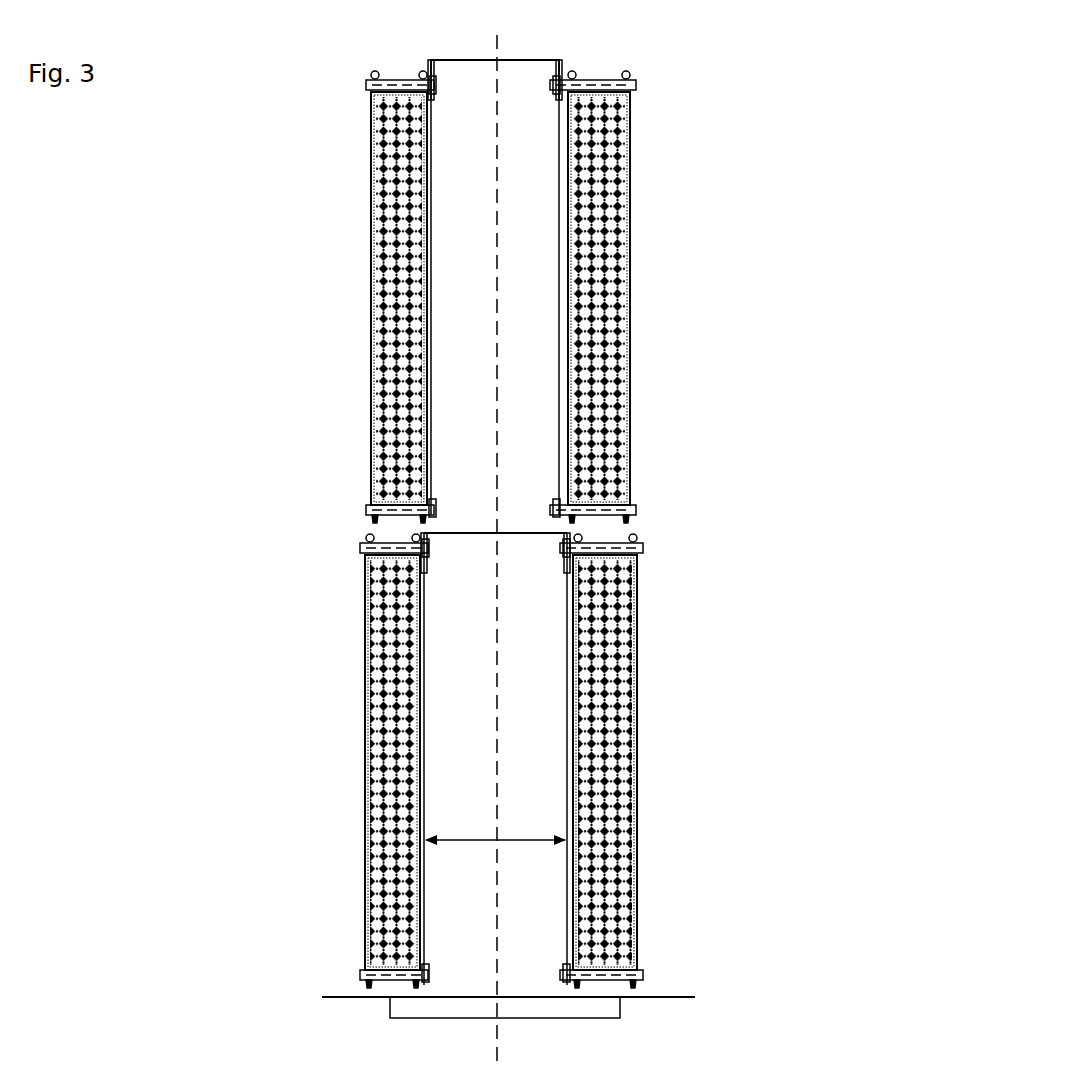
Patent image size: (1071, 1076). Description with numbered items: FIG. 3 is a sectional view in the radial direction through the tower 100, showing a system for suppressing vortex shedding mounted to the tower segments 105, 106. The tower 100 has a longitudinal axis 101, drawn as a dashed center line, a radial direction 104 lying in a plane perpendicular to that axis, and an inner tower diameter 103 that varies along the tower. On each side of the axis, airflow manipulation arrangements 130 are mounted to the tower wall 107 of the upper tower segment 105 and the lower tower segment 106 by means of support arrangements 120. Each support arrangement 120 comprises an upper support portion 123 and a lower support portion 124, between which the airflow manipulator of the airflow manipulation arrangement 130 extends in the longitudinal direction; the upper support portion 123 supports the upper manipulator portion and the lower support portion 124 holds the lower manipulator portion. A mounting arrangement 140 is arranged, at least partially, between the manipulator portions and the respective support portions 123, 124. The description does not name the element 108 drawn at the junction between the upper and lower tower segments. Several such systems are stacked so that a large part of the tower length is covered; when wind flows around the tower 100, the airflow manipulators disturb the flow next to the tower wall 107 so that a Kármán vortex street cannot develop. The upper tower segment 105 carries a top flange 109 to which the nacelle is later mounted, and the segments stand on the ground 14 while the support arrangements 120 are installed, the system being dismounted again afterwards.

The ground 14 is at (408, 1008).
The tower 100 is at (852, 156).
The longitudinal axis 101 is at (494, 1053).
The inner tower diameter 103 is at (472, 845).
The radial direction 104 is at (876, 484).
The upper tower segment 105 is at (553, 342).
The lower tower segment 106 is at (553, 779).
The tower wall 107 is at (566, 672).
The intermediate cross bar 108 is at (462, 534).
The top flange 109 is at (531, 58).
The support arrangement 120 is at (774, 66).
The upper support portion 123 is at (549, 546).
The lower support portion 124 is at (333, 502).
The airflow manipulation arrangement 130 is at (546, 546).
The mounting arrangement 140 is at (331, 121).